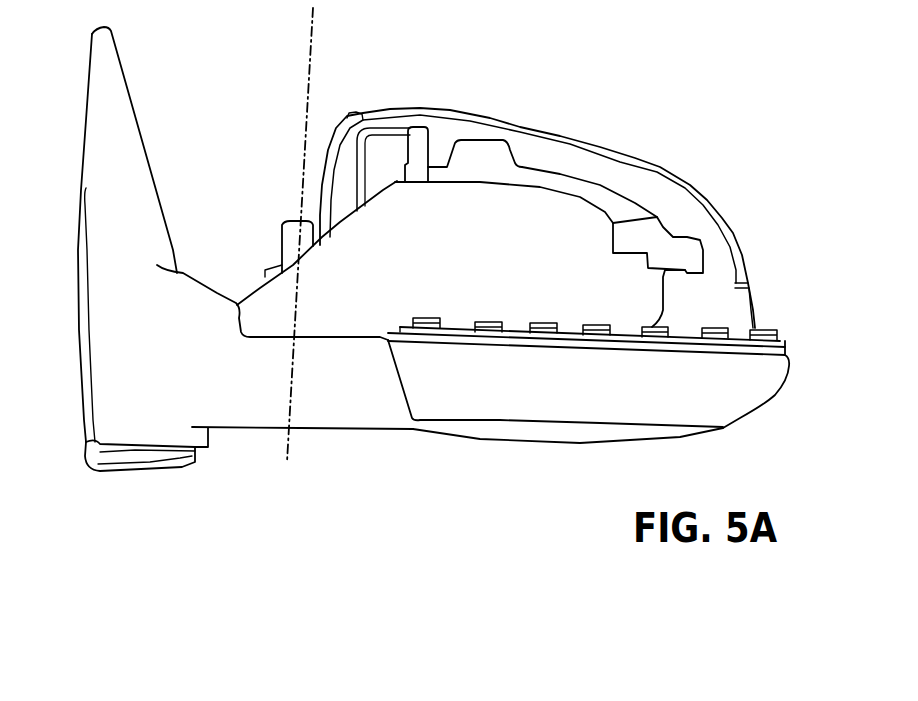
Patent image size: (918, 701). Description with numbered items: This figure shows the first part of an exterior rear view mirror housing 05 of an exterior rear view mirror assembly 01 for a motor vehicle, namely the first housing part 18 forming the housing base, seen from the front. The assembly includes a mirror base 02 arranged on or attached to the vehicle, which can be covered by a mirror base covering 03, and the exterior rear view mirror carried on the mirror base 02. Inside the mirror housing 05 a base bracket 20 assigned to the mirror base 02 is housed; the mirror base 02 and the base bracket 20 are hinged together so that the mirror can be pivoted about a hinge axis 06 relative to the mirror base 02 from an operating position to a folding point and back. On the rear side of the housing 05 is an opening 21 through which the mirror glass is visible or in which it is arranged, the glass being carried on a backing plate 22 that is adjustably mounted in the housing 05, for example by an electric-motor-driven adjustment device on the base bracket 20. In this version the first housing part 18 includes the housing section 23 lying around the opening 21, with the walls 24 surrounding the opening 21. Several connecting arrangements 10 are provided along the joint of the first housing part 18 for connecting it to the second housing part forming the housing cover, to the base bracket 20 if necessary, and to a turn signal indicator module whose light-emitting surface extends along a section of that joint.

The exterior rear view mirror assembly 01 is at (110, 478).
The mirror base 02 is at (240, 412).
The mirror base covering 03 is at (128, 143).
The exterior rear view mirror housing 05 is at (743, 403).
The hinge axis 06 is at (301, 83).
The connecting arrangements 10 is at (411, 314).
The first housing part 18 is at (593, 413).
The base bracket 20 is at (553, 204).
The opening 21 is at (538, 148).
The backing plate 22 is at (480, 153).
The housing section 23 is at (670, 178).
The walls 24 is at (731, 250).